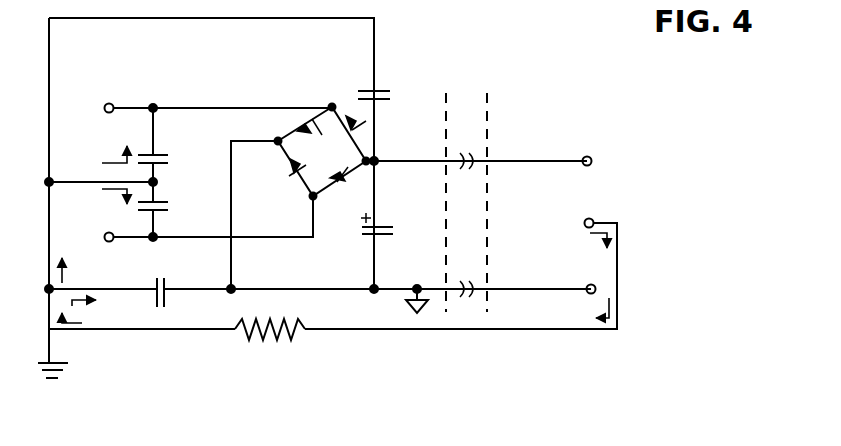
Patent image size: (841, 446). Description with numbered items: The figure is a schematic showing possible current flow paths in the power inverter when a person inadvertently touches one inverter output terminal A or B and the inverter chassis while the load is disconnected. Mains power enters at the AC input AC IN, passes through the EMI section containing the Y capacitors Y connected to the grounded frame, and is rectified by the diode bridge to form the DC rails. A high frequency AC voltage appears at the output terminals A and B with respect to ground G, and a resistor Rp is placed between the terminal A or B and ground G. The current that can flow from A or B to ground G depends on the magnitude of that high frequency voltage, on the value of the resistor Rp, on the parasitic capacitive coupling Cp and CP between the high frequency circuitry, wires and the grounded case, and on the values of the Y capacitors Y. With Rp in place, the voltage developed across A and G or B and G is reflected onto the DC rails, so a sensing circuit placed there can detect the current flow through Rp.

The AC input AC IN is at (219, 163).
The Y capacitors Y is at (116, 172).
The parasitic capacitive coupling Cp is at (387, 98).
The parasitic capacitive coupling CP is at (158, 280).
The inverter output terminal A is at (569, 138).
The inverter output terminal B is at (333, 274).
The resistor Rp is at (270, 345).
The ground G is at (67, 318).